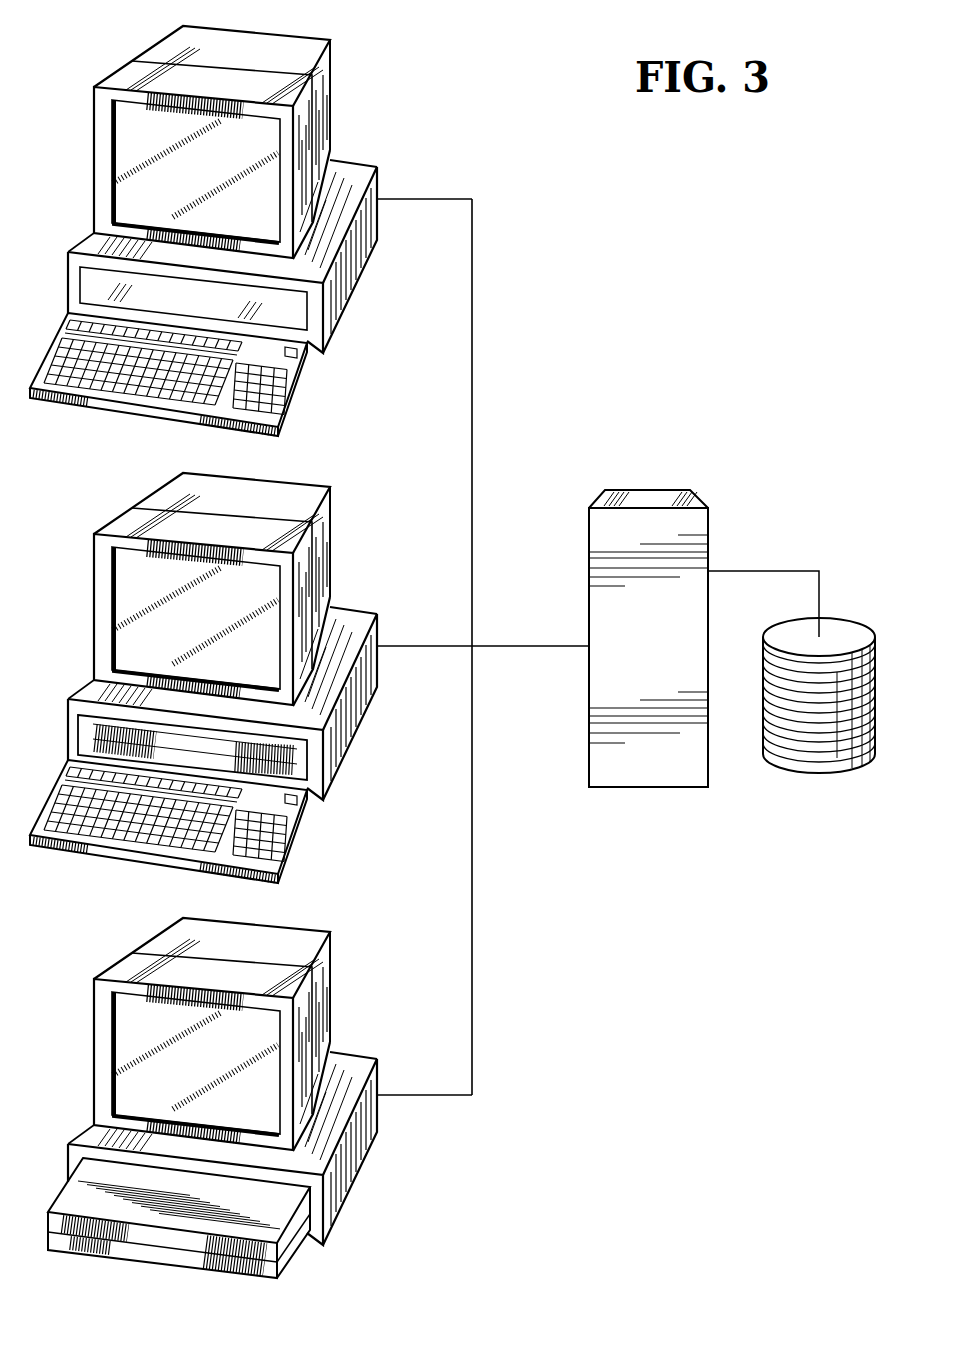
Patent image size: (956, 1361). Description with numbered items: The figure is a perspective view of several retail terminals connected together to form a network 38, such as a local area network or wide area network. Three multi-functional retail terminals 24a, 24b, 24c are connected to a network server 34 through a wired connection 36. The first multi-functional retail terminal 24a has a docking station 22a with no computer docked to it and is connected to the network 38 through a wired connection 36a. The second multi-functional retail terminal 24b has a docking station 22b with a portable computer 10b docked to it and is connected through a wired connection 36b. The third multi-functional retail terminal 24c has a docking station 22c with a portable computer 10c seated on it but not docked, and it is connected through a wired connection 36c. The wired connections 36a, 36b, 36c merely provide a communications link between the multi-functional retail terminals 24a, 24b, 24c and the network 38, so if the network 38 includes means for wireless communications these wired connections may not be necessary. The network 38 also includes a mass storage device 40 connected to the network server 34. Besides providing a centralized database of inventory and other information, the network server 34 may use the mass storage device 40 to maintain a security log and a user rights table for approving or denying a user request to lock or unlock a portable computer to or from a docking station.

The portable computer 10b is at (309, 773).
The portable computer 10c is at (294, 1266).
The docking station 22a is at (343, 322).
The docking station 22b is at (366, 723).
The docking station 22c is at (345, 1224).
The multi-functional retail terminal 24a is at (366, 85).
The multi-functional retail terminal 24b is at (366, 517).
The multi-functional retail terminal 24c is at (366, 967).
The network server 34 is at (648, 497).
The wired connection 36 is at (513, 646).
The wired connection 36a is at (411, 199).
The wired connection 36b is at (411, 646).
The wired connection 36c is at (413, 1096).
The network 38 is at (746, 253).
The mass storage device 40 is at (820, 773).